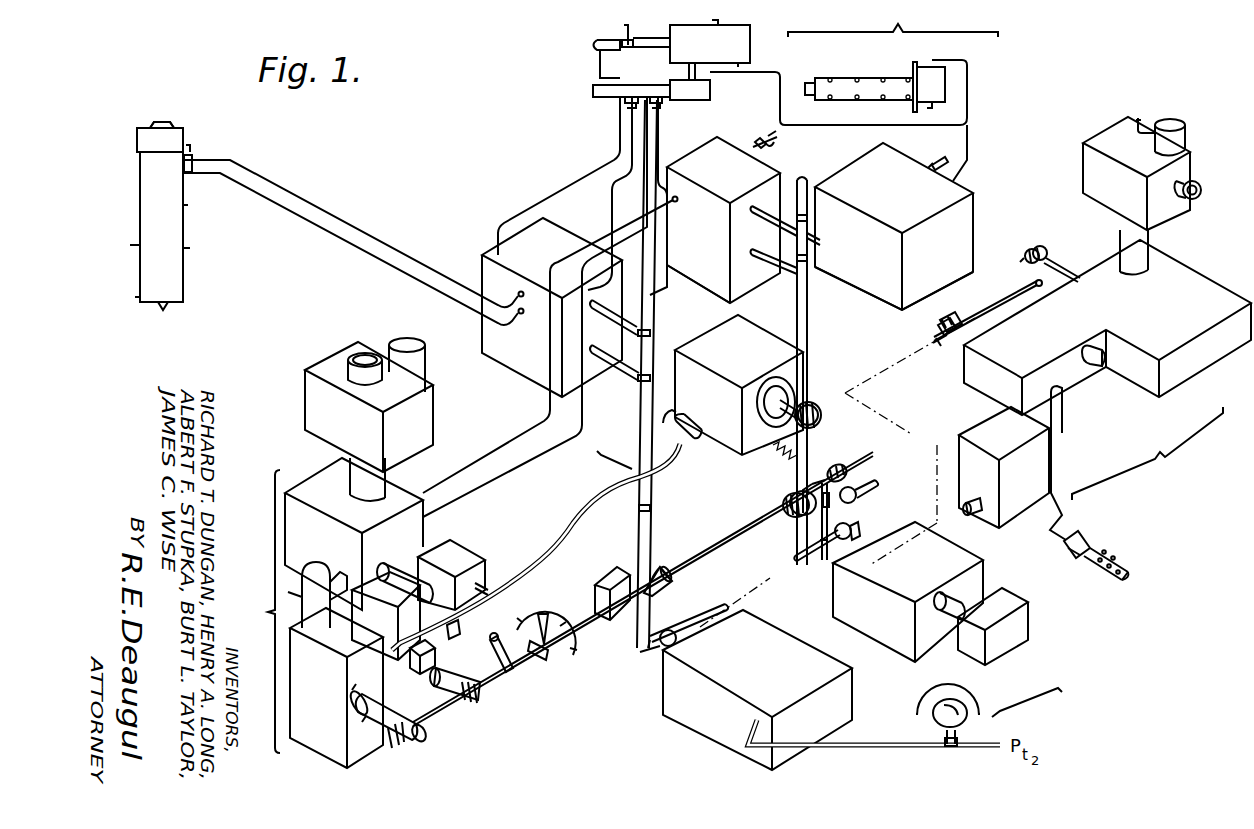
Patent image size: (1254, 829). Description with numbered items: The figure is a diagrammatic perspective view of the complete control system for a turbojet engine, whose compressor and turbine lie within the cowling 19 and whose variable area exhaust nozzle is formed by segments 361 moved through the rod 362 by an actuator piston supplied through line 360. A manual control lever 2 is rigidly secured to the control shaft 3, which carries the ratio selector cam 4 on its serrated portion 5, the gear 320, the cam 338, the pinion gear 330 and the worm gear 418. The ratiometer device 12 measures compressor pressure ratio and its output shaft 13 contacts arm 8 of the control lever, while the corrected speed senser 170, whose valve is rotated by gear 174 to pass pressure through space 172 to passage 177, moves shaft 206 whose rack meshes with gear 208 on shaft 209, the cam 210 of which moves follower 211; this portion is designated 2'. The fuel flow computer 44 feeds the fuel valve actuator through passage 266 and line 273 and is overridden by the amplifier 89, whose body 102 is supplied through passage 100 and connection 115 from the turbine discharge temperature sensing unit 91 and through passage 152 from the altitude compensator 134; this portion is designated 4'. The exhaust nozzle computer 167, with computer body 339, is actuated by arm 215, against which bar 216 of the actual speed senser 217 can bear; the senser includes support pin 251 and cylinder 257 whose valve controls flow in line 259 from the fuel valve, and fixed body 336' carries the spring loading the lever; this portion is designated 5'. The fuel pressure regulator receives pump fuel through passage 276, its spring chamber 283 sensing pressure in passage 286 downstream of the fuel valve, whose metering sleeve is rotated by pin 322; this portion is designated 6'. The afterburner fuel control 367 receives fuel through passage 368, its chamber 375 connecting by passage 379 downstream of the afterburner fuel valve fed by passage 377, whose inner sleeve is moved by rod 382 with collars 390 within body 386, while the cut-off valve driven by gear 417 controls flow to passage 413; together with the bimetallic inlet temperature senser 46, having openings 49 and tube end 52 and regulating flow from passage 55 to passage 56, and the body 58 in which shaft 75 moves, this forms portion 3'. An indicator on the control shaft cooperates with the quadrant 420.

The cowling 19 is at (140, 207).
The segments 361 is at (170, 124).
The rod 362 is at (193, 150).
The line 360 is at (340, 243).
The altitude compensator 134 is at (577, 55).
The passage 152 is at (600, 72).
The temperature sensing unit 91 is at (838, 67).
The passage 100 is at (968, 87).
The portion of the control system 4' is at (893, 18).
The pin 322 is at (778, 144).
The fitting 115 is at (947, 157).
The chamber housing 89 is at (969, 184).
The body 102 is at (870, 283).
The chamber 375 is at (1186, 140).
The passage 379 is at (1139, 118).
The passage 368 is at (1202, 191).
The fuel passage 377 is at (1140, 240).
The afterburner fuel control 367 is at (1238, 254).
The body 386 is at (1145, 393).
The passage 413 is at (1092, 366).
The portion of the control system 3' is at (1147, 453).
The control shaft 3 is at (725, 504).
The gear 417 is at (938, 320).
The worm gear 418 is at (947, 343).
The collars 390 is at (1036, 250).
The rod 382 is at (1062, 264).
The actual speed senser 217 is at (815, 402).
The arm 215 is at (654, 310).
The exhaust nozzle computer 167 is at (476, 255).
The computer body 339 is at (557, 233).
The passage 266 is at (490, 456).
The line 273 is at (530, 470).
The cylinder 257 is at (757, 210).
The bar 216 is at (700, 268).
The support pin 251 is at (758, 260).
The fuel flow computer 44 is at (751, 306).
The fuel passage 276 is at (345, 370).
The chamber 283 is at (430, 365).
The passage 286 is at (320, 572).
The portion of the control system 6' is at (311, 619).
The pinion gear 330 is at (393, 750).
The gear 320 is at (472, 698).
The manual control lever 2 is at (488, 652).
The quadrant 420 is at (570, 596).
The line 259 is at (545, 558).
The portion of the control system 5' is at (607, 463).
The fixed body 336' is at (605, 577).
The cam 338 is at (658, 566).
The gear 208 is at (672, 628).
The shaft 206 is at (657, 647).
The corrected speed senser 170 is at (688, 677).
The passage 177 is at (862, 751).
The space 172 is at (943, 697).
The gear 174 is at (952, 750).
The portion of the control system 2' is at (1036, 702).
The ratiometer device 12 is at (876, 650).
The control cam 4 is at (789, 492).
The serrated portion 5 is at (831, 456).
The follower 211 is at (858, 494).
The cam 210 is at (850, 538).
The shaft 209 is at (808, 550).
The arm 8 is at (820, 560).
The output shaft 13 is at (826, 570).
The body 58 is at (1012, 520).
The shaft 75 is at (978, 513).
The passage 55 is at (1072, 538).
The bimetallic senser 46 is at (1138, 572).
The openings 49 is at (1112, 556).
The end 52 is at (1124, 576).
The passage 56 is at (1072, 560).